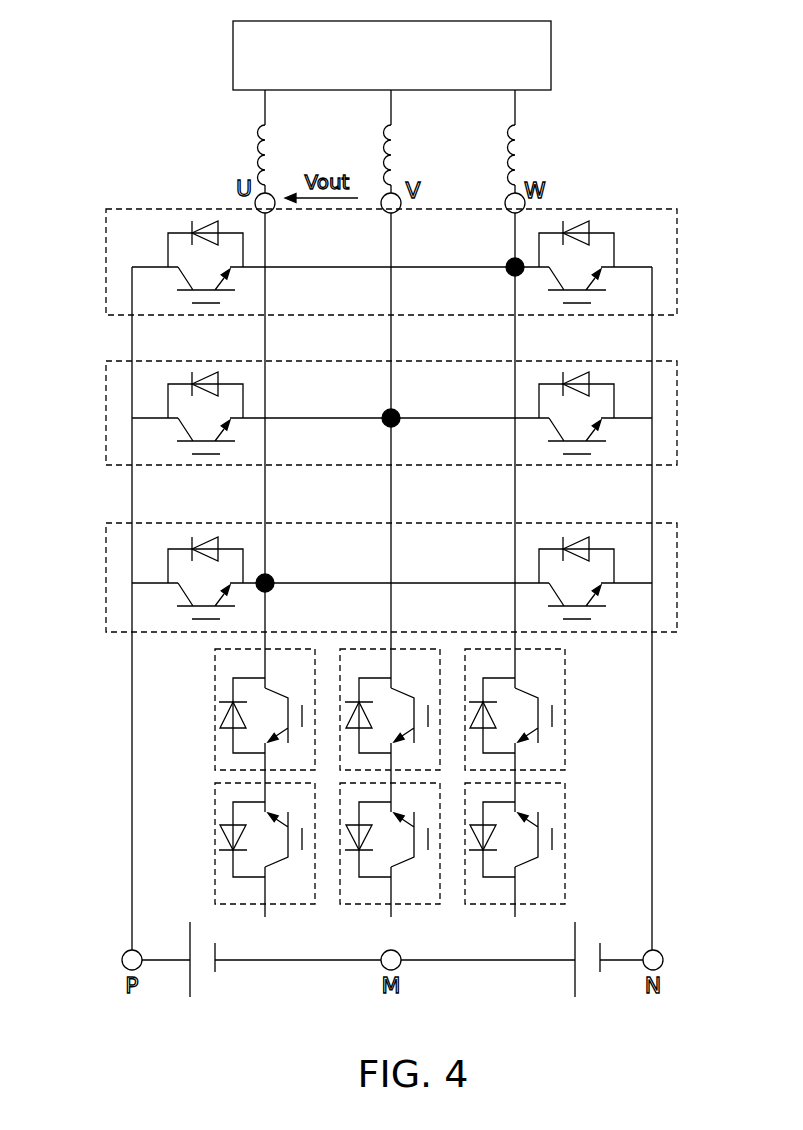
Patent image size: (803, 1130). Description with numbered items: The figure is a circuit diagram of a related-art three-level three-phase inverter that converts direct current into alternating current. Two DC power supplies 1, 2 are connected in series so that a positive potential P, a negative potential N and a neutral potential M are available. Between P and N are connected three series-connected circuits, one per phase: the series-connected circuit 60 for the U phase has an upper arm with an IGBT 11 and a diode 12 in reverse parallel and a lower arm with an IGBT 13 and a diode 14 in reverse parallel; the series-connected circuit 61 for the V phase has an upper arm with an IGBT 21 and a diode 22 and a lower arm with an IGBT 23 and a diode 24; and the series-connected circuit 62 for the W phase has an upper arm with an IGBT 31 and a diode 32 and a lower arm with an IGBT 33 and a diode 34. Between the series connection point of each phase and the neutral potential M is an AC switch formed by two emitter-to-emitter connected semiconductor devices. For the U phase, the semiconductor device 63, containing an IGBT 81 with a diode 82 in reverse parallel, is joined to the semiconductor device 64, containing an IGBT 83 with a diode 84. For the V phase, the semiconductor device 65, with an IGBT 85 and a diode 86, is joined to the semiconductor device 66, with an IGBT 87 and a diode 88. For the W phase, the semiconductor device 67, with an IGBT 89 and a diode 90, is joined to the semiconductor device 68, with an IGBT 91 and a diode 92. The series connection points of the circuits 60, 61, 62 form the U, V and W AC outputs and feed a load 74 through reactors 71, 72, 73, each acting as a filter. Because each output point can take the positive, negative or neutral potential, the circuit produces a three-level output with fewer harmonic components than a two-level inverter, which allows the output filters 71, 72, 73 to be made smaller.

The load 74 is at (233, 60).
The reactor 71 is at (257, 152).
The reactor 72 is at (385, 157).
The reactor 73 is at (509, 157).
The series-connected circuit 62 is at (107, 266).
The series-connected circuit 61 is at (107, 417).
The series-connected circuit 60 is at (107, 582).
The IGBT 31 is at (183, 278).
The diode 32 is at (168, 250).
The IGBT 33 is at (550, 275).
The diode 34 is at (539, 252).
The IGBT 21 is at (183, 430).
The diode 22 is at (168, 412).
The IGBT 23 is at (550, 426).
The diode 24 is at (539, 403).
The IGBT 11 is at (183, 595).
The diode 12 is at (168, 577).
The IGBT 13 is at (550, 590).
The diode 14 is at (539, 570).
The semiconductor device 64 is at (215, 732).
The semiconductor device 63 is at (215, 865).
The semiconductor device 66 is at (430, 648).
The semiconductor device 65 is at (437, 906).
The semiconductor device 68 is at (565, 718).
The semiconductor device 67 is at (565, 843).
The IGBT 83 is at (275, 690).
The diode 84 is at (250, 678).
The IGBT 87 is at (401, 690).
The diode 88 is at (376, 678).
The IGBT 91 is at (525, 690).
The diode 92 is at (500, 678).
The IGBT 81 is at (272, 862).
The diode 82 is at (257, 877).
The IGBT 85 is at (398, 862).
The diode 86 is at (383, 877).
The IGBT 89 is at (522, 862).
The diode 90 is at (507, 877).
The DC power supply 1 is at (208, 990).
The DC power supply 2 is at (592, 990).